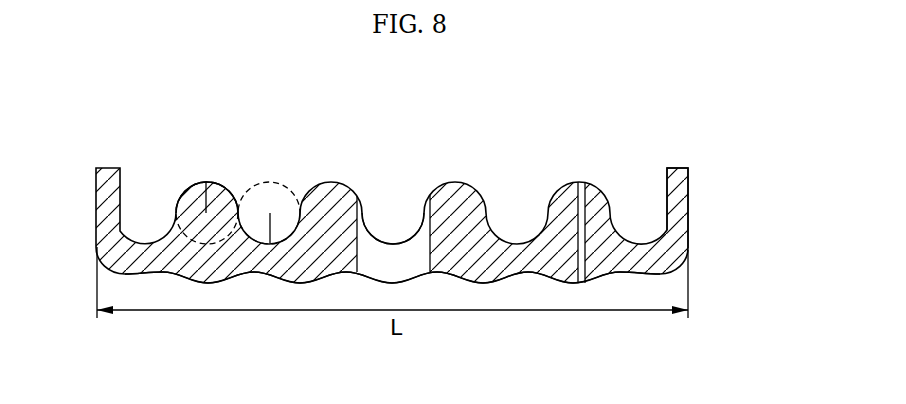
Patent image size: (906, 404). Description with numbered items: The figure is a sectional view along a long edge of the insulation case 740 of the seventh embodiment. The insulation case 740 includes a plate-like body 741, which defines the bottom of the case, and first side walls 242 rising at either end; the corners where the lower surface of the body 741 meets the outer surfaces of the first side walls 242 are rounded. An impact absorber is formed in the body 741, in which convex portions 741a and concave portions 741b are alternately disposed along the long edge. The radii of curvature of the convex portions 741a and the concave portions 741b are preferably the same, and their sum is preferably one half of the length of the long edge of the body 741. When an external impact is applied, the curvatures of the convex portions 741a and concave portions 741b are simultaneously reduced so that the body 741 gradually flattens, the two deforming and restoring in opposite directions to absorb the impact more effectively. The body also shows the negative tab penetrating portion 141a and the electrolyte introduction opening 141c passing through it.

The insulation case 740 is at (93, 111).
The body 741 is at (551, 292).
The convex portions 741a is at (198, 184).
The concave portions 741b is at (263, 235).
The negative tab penetrating portion 141a is at (392, 242).
The electrolyte introduction opening 141c is at (582, 184).
The first side walls 242 is at (685, 182).